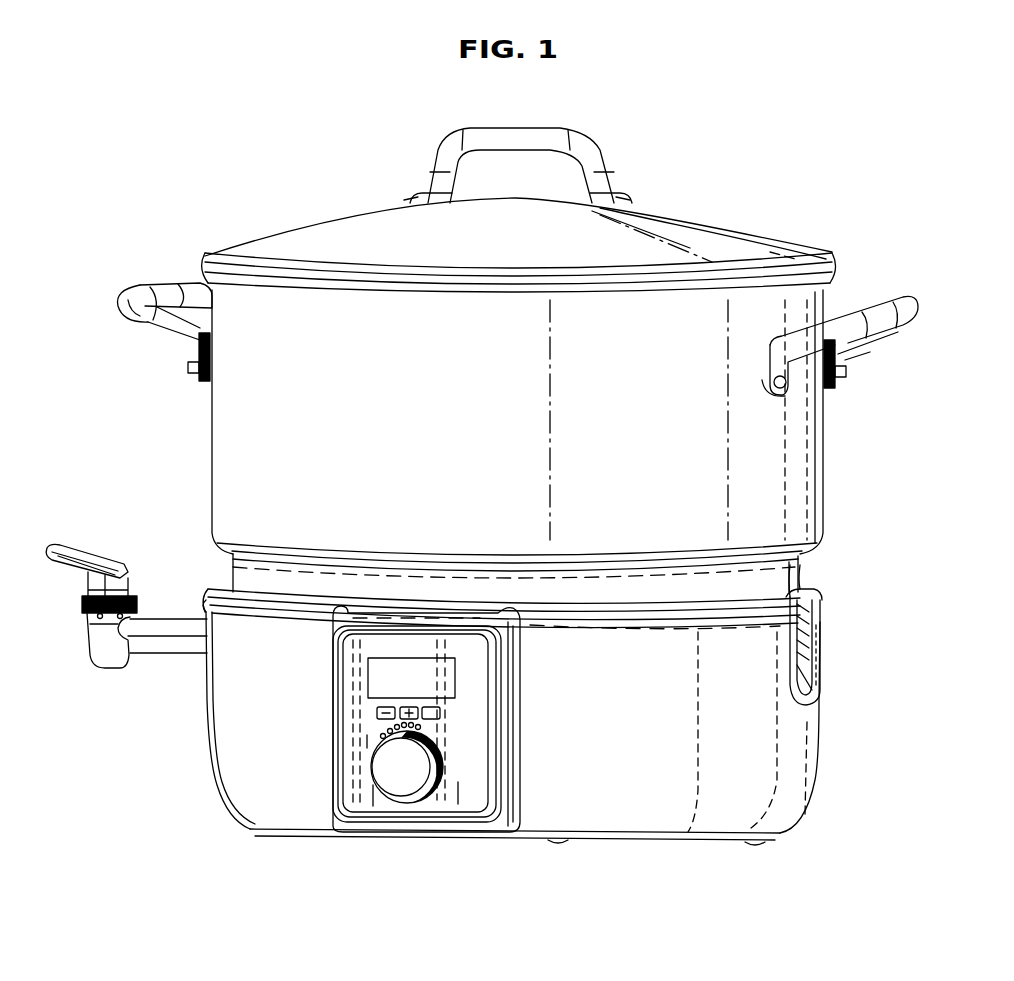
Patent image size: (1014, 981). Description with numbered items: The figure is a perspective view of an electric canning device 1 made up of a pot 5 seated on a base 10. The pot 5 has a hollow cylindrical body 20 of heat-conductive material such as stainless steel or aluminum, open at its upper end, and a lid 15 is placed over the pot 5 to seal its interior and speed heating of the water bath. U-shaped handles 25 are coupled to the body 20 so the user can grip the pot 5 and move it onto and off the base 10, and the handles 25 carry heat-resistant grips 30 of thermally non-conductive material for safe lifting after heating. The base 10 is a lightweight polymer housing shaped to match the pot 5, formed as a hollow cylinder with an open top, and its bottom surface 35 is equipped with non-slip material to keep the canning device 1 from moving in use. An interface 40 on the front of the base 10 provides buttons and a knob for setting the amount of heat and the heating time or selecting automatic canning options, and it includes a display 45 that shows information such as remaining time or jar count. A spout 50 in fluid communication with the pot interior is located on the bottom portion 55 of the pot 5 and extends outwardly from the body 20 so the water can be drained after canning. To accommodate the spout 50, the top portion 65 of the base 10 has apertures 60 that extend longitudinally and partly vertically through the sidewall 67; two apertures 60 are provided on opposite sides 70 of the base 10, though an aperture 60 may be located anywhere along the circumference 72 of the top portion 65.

The canning device 1 is at (265, 125).
The pot 5 is at (855, 438).
The base 10 is at (780, 848).
The lid 15 is at (708, 218).
The body 20 is at (255, 428).
The handles 25 is at (120, 275).
The heat-resistant grips 30 is at (188, 280).
The bottom surface 35 is at (660, 840).
The interface 40 is at (377, 834).
The display 45 is at (360, 700).
The spout 50 is at (92, 635).
The bottom portion 55 is at (808, 570).
The aperture 60 is at (812, 672).
The top portion 65 is at (262, 640).
The sidewall 67 is at (215, 598).
The opposite sides 70 is at (838, 650).
The circumference 72 is at (832, 600).